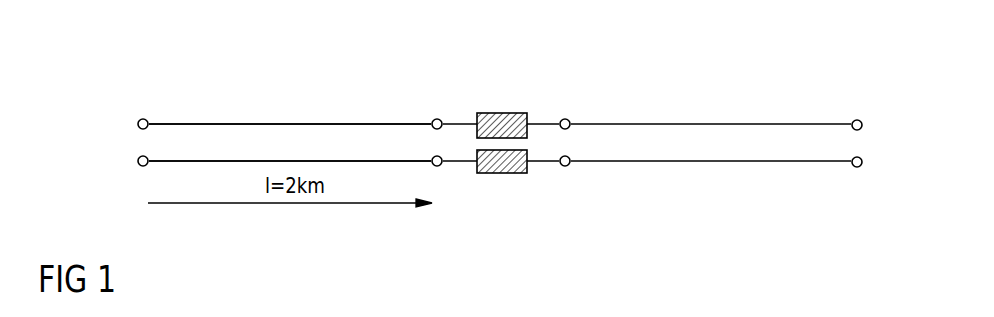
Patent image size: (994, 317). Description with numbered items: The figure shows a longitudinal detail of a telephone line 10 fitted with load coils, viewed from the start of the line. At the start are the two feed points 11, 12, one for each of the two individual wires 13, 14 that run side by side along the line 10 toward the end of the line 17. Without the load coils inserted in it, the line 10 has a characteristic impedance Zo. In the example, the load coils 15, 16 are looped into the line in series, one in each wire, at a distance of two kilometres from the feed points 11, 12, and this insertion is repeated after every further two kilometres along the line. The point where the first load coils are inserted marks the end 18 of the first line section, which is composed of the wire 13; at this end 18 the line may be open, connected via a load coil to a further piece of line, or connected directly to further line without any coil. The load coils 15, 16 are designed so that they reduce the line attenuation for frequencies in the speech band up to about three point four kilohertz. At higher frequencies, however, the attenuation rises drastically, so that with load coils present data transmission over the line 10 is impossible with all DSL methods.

The line 10 is at (243, 80).
The feed point 11 is at (137, 121).
The feed point 12 is at (137, 158).
The wire 13 is at (295, 122).
The wire 14 is at (351, 160).
The load coil 15 is at (503, 112).
The load coil 16 is at (503, 174).
The end of the line 17 is at (863, 127).
The end of the line section 18 is at (440, 117).